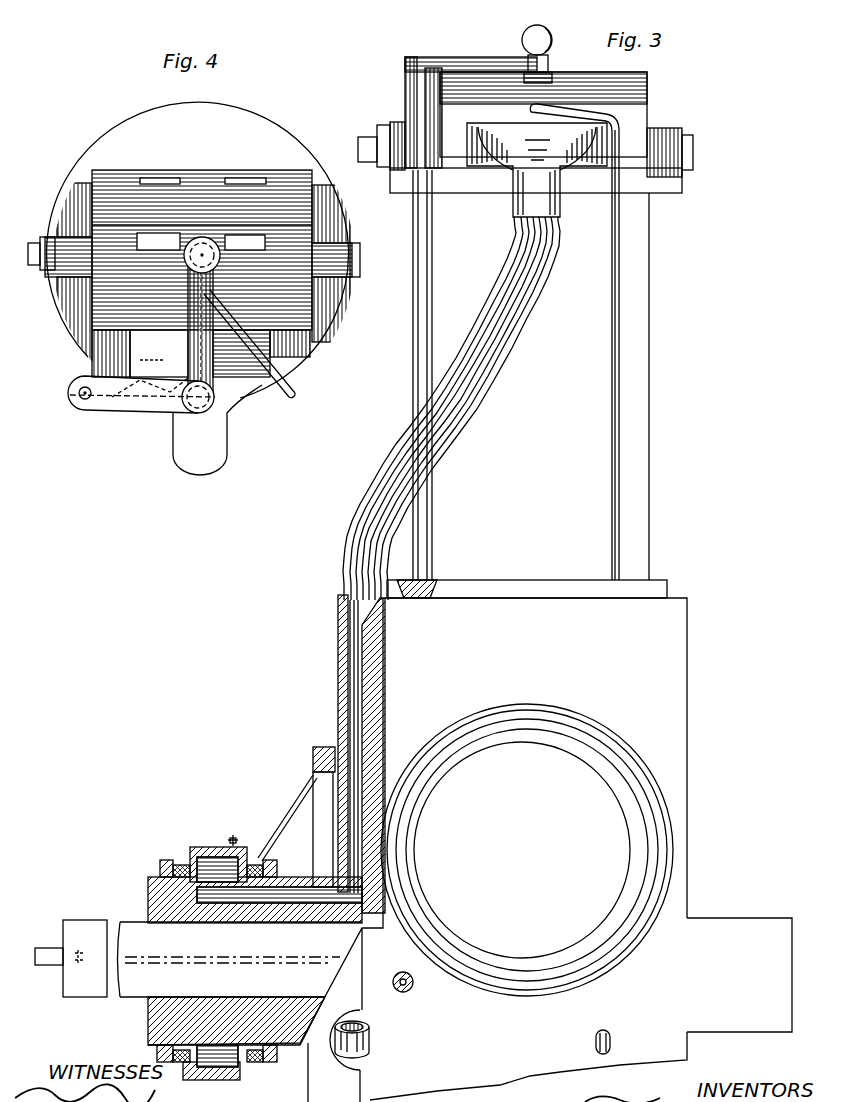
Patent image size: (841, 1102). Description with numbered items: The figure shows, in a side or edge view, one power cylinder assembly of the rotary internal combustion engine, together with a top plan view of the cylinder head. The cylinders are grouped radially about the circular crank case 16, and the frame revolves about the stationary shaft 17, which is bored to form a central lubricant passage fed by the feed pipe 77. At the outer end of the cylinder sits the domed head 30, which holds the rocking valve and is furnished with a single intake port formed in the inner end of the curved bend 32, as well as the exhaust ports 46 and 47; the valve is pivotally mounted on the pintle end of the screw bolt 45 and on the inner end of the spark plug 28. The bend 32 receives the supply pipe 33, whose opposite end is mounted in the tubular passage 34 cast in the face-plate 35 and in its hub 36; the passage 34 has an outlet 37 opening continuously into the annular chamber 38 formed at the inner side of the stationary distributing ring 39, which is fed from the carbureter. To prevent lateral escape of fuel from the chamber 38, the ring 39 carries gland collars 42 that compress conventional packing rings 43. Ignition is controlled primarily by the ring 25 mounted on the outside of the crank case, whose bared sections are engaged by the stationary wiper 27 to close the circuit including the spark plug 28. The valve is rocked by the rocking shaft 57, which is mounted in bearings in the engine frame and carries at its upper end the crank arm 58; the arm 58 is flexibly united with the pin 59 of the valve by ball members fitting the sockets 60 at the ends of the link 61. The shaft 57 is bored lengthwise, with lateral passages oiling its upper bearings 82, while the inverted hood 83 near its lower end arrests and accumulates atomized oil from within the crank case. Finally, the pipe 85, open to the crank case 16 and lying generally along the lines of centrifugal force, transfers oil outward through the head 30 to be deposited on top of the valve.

In FIG. 3, the crank case 16 is at (622, 707).
In FIG. 3, the stationary shaft 17 is at (765, 929).
In FIG. 3, the ring 25 is at (327, 746).
In FIG. 3, the stationary wiper 27 is at (300, 797).
In FIG. 4, the spark plug 28 is at (36, 265).
In FIG. 3, the spark plug 28 is at (366, 146).
In FIG. 4, the domed head 30 is at (205, 187).
In FIG. 3, the domed head 30 is at (641, 96).
In FIG. 4, the bend 32 is at (192, 468).
In FIG. 3, the bend 32 is at (518, 178).
In FIG. 3, the supply pipe 33 is at (465, 400).
In FIG. 3, the tubular passage 34 is at (300, 892).
In FIG. 3, the face-plate 35 is at (678, 663).
In FIG. 3, the hub 36 is at (160, 910).
In FIG. 3, the outlet 37 is at (222, 885).
In FIG. 3, the annular chamber 38 is at (240, 830).
In FIG. 3, the distributing ring 39 is at (213, 850).
In FIG. 3, the gland collar 42 is at (165, 862).
In FIG. 3, the packing ring 43 is at (178, 866).
In FIG. 4, the screw bolt 45 is at (357, 272).
In FIG. 3, the screw bolt 45 is at (690, 152).
In FIG. 4, the exhaust port 46 is at (157, 182).
In FIG. 4, the exhaust port 47 is at (140, 244).
In FIG. 4, the rocking shaft 57 is at (84, 405).
In FIG. 3, the rocking shaft 57 is at (410, 386).
In FIG. 4, the crank arm 58 is at (128, 410).
In FIG. 3, the crank arm 58 is at (472, 66).
In FIG. 3, the pin 59 is at (550, 80).
In FIG. 4, the socket 60 is at (203, 247).
In FIG. 3, the socket 60 is at (529, 38).
In FIG. 4, the link 61 is at (190, 356).
In FIG. 3, the feed pipe 77 is at (47, 958).
In FIG. 3, the upper bearing 82 is at (411, 93).
In FIG. 3, the inverted hood 83 is at (412, 597).
In FIG. 3, the pipe 85 is at (607, 396).